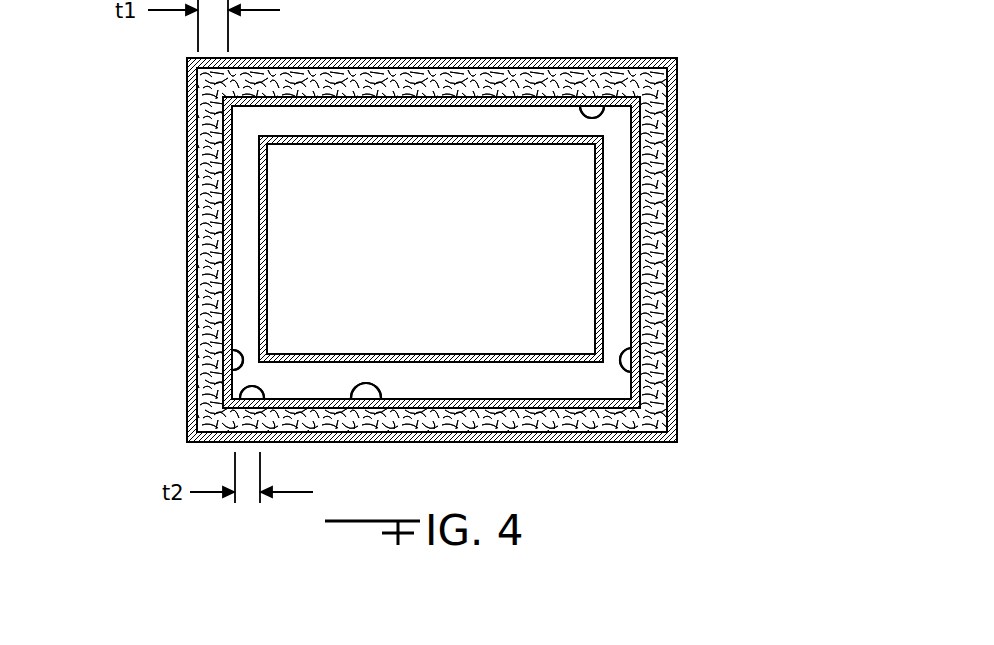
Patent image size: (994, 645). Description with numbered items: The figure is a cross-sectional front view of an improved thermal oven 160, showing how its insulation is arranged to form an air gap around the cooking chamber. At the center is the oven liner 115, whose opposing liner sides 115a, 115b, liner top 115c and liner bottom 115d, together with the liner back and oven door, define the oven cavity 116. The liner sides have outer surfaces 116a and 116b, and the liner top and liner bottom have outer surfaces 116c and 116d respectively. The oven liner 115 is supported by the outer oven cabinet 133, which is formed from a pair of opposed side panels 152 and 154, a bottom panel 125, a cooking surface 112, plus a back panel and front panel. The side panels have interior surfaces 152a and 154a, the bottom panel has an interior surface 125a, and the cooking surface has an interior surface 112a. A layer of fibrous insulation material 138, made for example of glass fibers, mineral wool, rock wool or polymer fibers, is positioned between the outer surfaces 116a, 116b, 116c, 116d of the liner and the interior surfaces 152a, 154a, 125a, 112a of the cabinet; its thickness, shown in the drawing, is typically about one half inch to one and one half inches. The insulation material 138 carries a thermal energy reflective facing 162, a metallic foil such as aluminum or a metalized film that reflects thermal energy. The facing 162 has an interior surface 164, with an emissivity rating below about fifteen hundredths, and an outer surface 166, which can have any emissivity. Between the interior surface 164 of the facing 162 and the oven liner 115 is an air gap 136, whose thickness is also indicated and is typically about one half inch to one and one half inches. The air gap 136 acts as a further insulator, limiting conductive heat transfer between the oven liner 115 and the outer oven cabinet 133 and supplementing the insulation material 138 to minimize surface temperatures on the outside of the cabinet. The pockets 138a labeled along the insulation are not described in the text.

The cooking surface 112 is at (441, 58).
The interior surface of cooking surface 112a is at (307, 58).
The oven liner 115 is at (250, 254).
The liner side 115a is at (268, 248).
The liner side 115b is at (594, 201).
The liner top 115c is at (413, 145).
The liner bottom 115d is at (440, 351).
The oven cavity 116 is at (557, 281).
The outer surface of liner side 116a is at (262, 318).
The outer surface of liner side 116b is at (598, 308).
The outer surface of liner top 116c is at (520, 134).
The outer surface of liner bottom 116d is at (330, 362).
The bottom panel 125 is at (585, 436).
The interior surface of bottom panel 125a is at (421, 437).
The outer oven cabinet 133 is at (692, 168).
The air gap 136 is at (468, 108).
The fibrous insulation material 138 is at (658, 62).
The filler material pockets 138a is at (613, 95).
The side panel 152 is at (190, 168).
The interior surface of side panel 152a is at (198, 122).
The side panel 154 is at (673, 240).
The interior surface of side panel 154a is at (670, 259).
The thermal oven 160 is at (692, 74).
The thermal energy reflective facing 162 is at (378, 96).
The interior surface of facing 164 is at (190, 440).
The outer surface of facing 166 is at (527, 402).